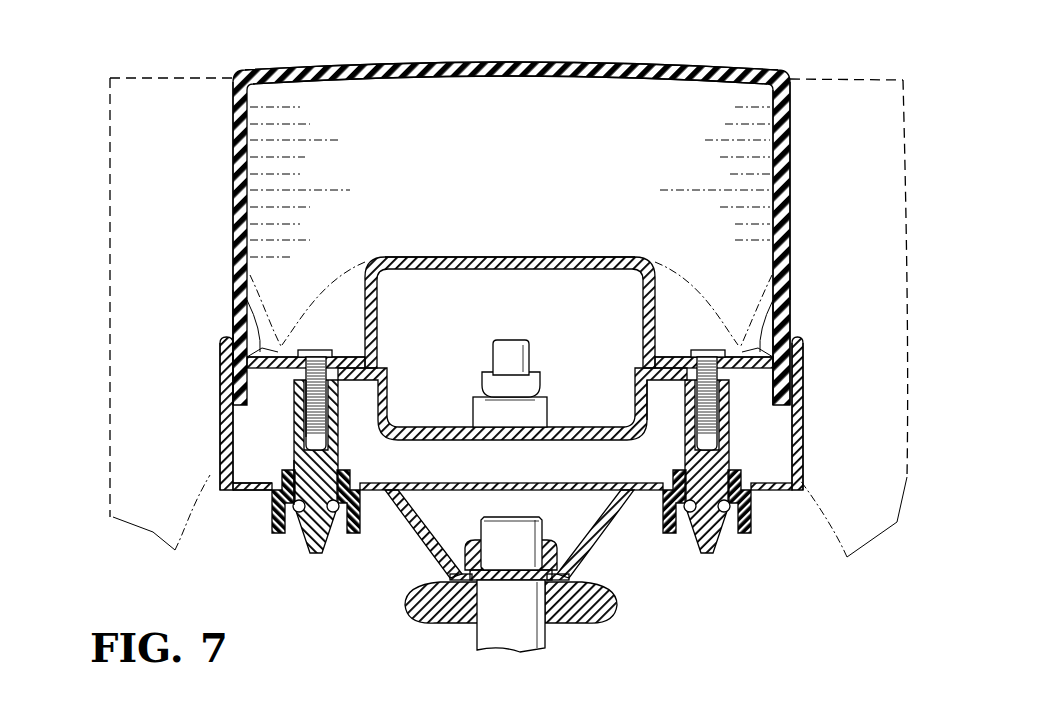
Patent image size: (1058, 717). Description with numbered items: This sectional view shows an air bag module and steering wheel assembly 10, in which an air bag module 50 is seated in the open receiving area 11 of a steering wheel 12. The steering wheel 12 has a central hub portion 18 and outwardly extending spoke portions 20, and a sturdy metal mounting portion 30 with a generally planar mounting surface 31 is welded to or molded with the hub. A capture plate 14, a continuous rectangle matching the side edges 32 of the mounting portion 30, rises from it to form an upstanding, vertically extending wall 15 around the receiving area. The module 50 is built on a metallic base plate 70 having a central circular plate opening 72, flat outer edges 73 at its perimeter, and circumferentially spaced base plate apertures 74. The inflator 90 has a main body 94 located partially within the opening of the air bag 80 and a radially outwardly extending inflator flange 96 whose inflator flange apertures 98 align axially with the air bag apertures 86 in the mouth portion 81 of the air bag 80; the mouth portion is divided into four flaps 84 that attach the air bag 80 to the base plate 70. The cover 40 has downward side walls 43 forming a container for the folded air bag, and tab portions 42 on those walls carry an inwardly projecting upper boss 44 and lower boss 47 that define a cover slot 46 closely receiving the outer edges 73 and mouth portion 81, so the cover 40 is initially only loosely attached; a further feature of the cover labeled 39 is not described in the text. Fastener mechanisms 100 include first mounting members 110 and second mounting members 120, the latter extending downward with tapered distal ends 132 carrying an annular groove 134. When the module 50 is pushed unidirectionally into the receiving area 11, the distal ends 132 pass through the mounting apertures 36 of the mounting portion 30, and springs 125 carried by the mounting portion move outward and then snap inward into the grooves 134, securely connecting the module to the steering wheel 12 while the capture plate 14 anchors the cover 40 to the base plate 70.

The air bag module and steering wheel assembly 10 is at (775, 48).
The open receiving area 11 is at (270, 462).
The steering wheel 12 is at (148, 532).
The capture plate 14 is at (221, 402).
The upstanding vertically extending wall 15 is at (220, 430).
The central hub portion 18 is at (595, 568).
The spoke portions 20 is at (142, 77).
The mounting portion 30 is at (776, 496).
The planar mounting surface 31 is at (612, 480).
The side edges 32 is at (665, 495).
The mounting apertures 36 is at (716, 527).
The cap top wall 39 is at (537, 68).
The cover 40 is at (642, 60).
The tab portions 42 is at (236, 300).
The side walls 43 is at (231, 153).
The upper boss 44 is at (282, 345).
The cover slot 46 is at (277, 342).
The lower boss 47 is at (232, 442).
The air bag module 50 is at (792, 122).
The base plate 70 is at (355, 355).
The central circular plate opening 72 is at (357, 365).
The flat outer edges 73 is at (800, 327).
The base plate apertures 74 is at (378, 395).
The air bag 80 is at (742, 190).
The mouth portion 81 is at (740, 342).
The flaps 84 is at (766, 326).
The air bag apertures 86 is at (692, 352).
The inflator 90 is at (462, 254).
The main body 94 is at (512, 257).
The inflator flange 96 is at (674, 385).
The inflator flange apertures 98 is at (240, 476).
The fastener mechanisms 100 is at (348, 462).
The first mounting members 110 is at (330, 395).
The second mounting members 120 is at (310, 542).
The springs 125 is at (334, 512).
The tapered distal ends 132 is at (300, 530).
The annular groove 134 is at (680, 527).